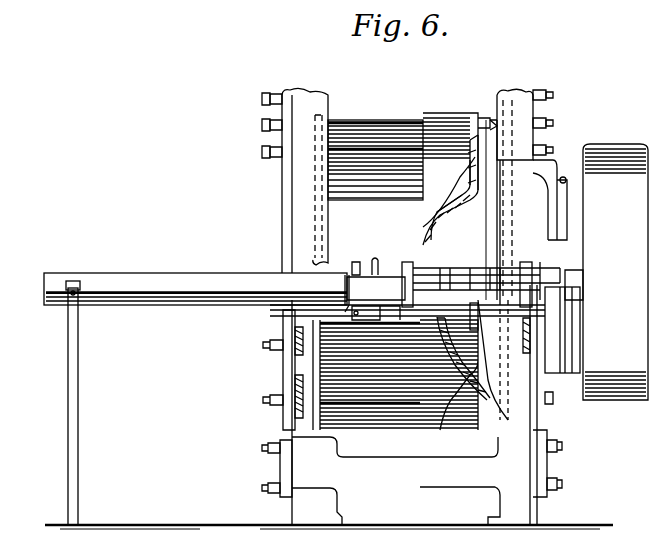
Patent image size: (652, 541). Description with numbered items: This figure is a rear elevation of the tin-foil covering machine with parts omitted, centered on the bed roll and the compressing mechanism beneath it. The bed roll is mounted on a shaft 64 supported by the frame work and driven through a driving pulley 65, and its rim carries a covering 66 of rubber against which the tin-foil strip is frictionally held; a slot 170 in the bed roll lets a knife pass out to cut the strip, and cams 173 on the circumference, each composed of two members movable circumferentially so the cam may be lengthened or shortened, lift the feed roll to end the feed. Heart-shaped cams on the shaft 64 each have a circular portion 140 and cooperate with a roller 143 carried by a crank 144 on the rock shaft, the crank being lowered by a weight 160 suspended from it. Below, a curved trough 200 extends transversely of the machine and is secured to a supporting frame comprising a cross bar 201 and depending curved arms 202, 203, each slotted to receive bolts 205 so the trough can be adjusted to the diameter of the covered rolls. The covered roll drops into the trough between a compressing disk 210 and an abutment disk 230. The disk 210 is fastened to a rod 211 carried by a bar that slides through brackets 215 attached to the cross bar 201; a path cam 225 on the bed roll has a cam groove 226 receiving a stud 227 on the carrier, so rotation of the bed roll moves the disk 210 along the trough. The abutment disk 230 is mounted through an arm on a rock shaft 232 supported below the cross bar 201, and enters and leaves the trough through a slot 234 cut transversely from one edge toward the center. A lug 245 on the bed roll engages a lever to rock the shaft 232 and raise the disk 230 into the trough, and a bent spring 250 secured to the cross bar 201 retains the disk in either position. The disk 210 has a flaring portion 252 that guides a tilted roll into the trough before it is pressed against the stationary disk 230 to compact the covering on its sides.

The shaft 64 is at (578, 270).
The driving pulley 65 is at (615, 272).
The rubber covering 66 is at (375, 167).
The circular portion 140 is at (497, 124).
The roller 143 is at (503, 92).
The crank 144 is at (552, 168).
The weight 160 is at (565, 315).
The slot 170 is at (315, 153).
The cam 173 is at (330, 121).
The trough 200 is at (182, 268).
The cross bar 201 is at (290, 310).
The curved arm 202 is at (300, 432).
The curved arm 203 is at (540, 418).
The bolts 205 is at (277, 345).
The compressing disk 210 is at (355, 255).
The rod 211 is at (503, 262).
The brackets 215 is at (407, 262).
The path cam 225 is at (468, 187).
The cam groove 226 is at (480, 115).
The stud 227 is at (460, 214).
The abutment disk 230 is at (343, 292).
The rock shaft 232 is at (398, 320).
The slot 234 is at (352, 270).
The lug 245 is at (497, 138).
The bent spring 250 is at (512, 412).
The flaring portion 252 is at (375, 258).